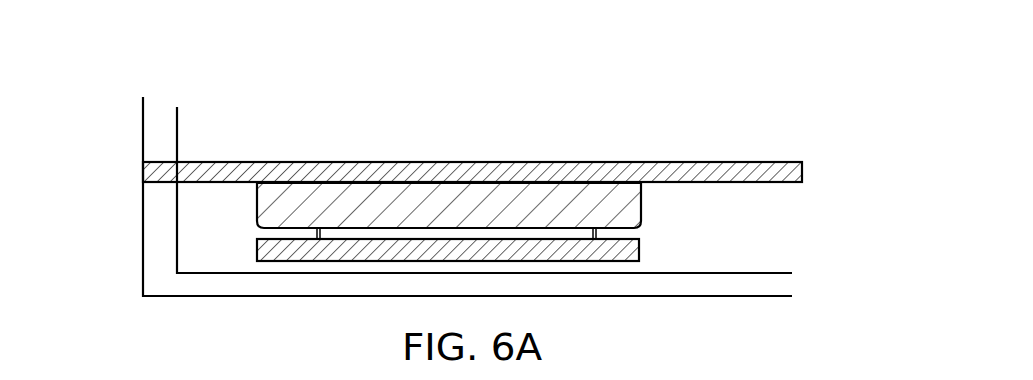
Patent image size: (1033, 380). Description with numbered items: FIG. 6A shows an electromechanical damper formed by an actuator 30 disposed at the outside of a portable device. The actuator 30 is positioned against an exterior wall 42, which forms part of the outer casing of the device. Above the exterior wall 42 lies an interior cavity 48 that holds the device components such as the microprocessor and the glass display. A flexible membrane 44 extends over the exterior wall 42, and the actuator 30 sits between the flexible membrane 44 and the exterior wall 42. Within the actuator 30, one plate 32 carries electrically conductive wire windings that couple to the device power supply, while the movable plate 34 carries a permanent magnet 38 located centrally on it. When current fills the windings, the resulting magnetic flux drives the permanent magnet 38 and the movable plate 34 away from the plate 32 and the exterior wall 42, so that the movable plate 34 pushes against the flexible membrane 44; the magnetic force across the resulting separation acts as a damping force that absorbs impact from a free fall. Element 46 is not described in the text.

The actuator 30 is at (231, 206).
The plate 32 is at (647, 211).
The movable plate 34 is at (650, 249).
The permanent magnet 38 is at (229, 239).
The exterior wall 42 is at (780, 163).
The flexible membrane 44 is at (774, 284).
The outer housing wall 46 is at (142, 118).
The interior cavity 48 is at (524, 103).